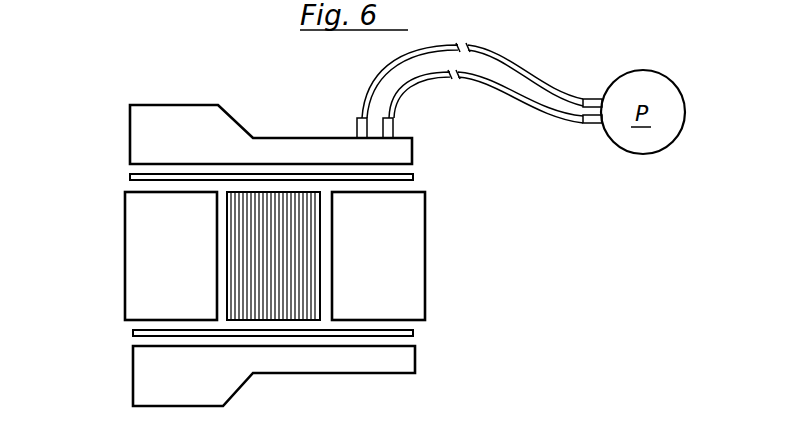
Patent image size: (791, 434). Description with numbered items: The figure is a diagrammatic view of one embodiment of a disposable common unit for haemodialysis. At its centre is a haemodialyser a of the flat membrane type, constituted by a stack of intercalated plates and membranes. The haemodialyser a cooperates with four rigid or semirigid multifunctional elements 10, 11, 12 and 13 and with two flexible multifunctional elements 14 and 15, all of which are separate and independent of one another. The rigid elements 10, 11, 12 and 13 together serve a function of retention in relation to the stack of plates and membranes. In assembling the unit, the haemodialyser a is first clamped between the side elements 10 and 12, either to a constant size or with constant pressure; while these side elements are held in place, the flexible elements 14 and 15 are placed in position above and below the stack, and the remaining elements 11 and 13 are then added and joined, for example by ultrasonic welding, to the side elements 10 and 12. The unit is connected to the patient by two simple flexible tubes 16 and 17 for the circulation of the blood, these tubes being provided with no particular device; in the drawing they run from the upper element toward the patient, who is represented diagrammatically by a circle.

The rigid multifunctional element 10 is at (127, 253).
The rigid multifunctional element 11 is at (134, 370).
The rigid multifunctional element 12 is at (420, 273).
The rigid multifunctional element 13 is at (130, 133).
The flexible multifunctional element 14 is at (413, 333).
The flexible multifunctional element 15 is at (413, 177).
The flexible tube 16 is at (540, 119).
The flexible tube 17 is at (538, 86).
The haemodialyser a is at (287, 193).